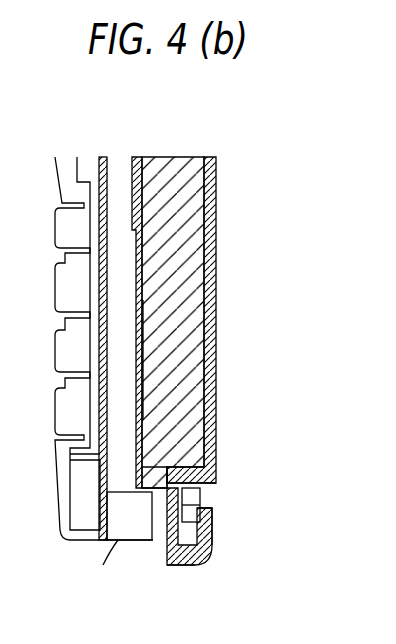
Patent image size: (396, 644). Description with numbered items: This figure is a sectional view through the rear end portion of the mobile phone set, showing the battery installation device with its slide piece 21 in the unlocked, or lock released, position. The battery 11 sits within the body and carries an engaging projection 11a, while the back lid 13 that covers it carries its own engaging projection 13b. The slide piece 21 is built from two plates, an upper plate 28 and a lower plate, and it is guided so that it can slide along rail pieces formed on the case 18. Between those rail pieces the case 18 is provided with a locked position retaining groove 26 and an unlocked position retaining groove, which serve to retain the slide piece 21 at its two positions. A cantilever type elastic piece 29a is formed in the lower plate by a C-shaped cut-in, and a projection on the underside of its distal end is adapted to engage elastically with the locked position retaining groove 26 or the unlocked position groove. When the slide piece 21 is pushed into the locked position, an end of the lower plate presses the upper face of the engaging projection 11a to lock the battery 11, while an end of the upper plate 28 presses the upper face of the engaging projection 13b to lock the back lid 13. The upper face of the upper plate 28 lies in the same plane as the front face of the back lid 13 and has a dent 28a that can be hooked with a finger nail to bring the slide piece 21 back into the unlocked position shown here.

The battery 11 is at (205, 291).
The engaging projection 11a is at (150, 485).
The back lid 13 is at (212, 190).
The engaging projection 13b is at (205, 484).
The case 18 is at (140, 383).
The slide piece 21 is at (197, 563).
The locked position retaining groove 26 is at (152, 502).
The upper plate 28 is at (212, 545).
The dent 28a is at (213, 520).
The elastic piece 29a is at (202, 505).